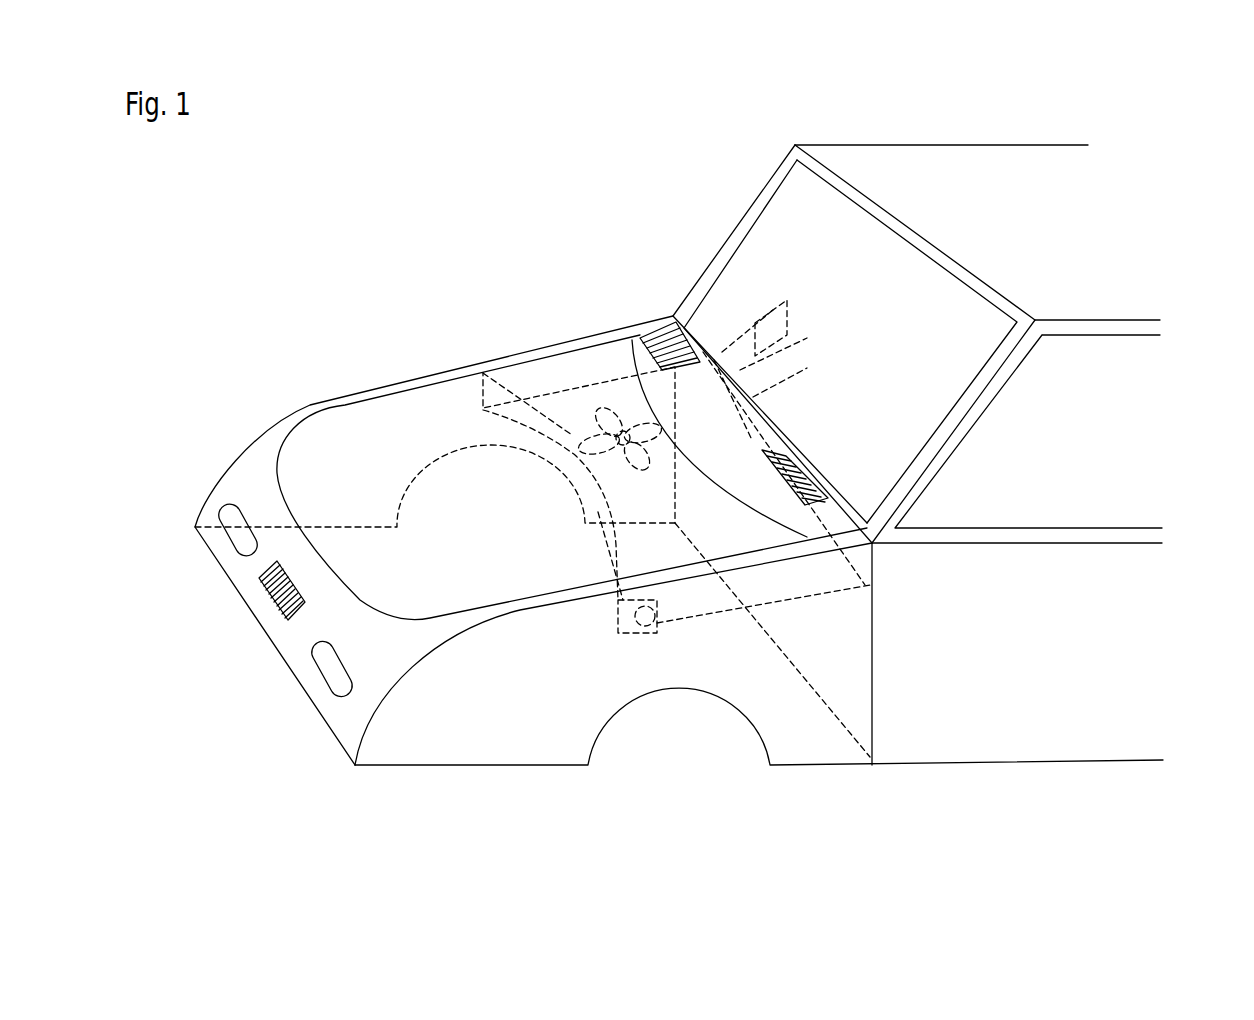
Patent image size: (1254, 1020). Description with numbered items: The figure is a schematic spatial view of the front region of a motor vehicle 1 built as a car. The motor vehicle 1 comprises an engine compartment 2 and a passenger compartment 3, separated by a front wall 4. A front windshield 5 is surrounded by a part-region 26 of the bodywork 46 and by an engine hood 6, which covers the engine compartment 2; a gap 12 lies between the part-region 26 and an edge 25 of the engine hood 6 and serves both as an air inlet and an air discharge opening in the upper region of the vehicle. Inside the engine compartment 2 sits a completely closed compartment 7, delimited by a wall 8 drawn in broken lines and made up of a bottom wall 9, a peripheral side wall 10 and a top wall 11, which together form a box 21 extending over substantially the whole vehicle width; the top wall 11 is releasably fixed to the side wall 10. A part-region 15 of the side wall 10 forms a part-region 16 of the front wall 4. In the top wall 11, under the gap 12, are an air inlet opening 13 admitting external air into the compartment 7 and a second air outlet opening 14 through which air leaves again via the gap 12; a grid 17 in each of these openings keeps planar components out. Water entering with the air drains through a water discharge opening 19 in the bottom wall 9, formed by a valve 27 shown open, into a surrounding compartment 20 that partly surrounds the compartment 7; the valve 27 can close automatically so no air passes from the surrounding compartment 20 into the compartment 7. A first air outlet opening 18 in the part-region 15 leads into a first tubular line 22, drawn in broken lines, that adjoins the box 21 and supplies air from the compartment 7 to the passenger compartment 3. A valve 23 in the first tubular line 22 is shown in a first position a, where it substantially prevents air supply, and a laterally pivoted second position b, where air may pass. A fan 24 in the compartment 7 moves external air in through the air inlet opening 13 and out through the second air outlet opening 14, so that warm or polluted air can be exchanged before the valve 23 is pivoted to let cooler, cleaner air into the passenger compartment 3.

The motor vehicle 1 is at (317, 212).
The engine compartment 2 is at (338, 433).
The passenger compartment 3 is at (800, 198).
The front wall 4 is at (848, 700).
The front windshield 5 is at (777, 235).
The engine hood 6 is at (357, 592).
The compartment 7 is at (563, 410).
The wall 8 is at (753, 578).
The bottom wall 9 is at (707, 597).
The side wall 10 is at (497, 398).
The top wall 11 is at (540, 377).
The gap 12 is at (840, 528).
The air inlet opening 13 is at (647, 330).
The second air outlet opening 14 is at (817, 497).
The part-region of the side wall 15 is at (873, 548).
The part-region of the front wall 16 is at (865, 558).
The grid 17 is at (664, 330).
The first air outlet opening 18 is at (673, 318).
The water discharge opening 19 is at (647, 637).
The surrounding compartment 20 is at (468, 593).
The box 21 is at (720, 613).
The first tubular line 22 is at (728, 345).
The valve 23 is at (753, 347).
The fan 24 is at (600, 413).
The edge of the engine hood 25 is at (801, 537).
The part-region of the bodywork 26 is at (872, 543).
The valve 27 is at (637, 635).
The bodywork 46 is at (830, 177).
The first position a is at (763, 305).
The second position b is at (774, 317).